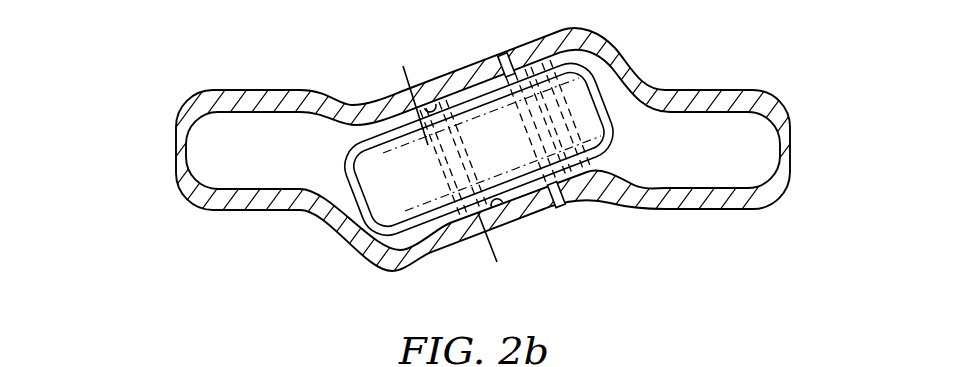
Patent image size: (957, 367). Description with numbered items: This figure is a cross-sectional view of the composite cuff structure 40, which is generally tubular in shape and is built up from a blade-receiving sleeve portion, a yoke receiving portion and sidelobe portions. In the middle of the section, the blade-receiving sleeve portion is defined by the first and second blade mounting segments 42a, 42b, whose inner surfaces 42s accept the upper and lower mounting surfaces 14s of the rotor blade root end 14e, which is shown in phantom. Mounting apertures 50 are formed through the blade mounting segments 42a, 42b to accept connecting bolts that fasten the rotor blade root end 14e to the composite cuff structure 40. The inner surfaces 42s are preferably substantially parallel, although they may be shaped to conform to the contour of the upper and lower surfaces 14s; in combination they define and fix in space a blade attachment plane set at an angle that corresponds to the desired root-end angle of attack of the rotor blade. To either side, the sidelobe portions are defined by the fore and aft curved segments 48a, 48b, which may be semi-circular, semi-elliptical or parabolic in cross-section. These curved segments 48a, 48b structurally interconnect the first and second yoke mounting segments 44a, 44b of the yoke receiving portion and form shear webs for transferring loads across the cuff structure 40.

The composite cuff structure 40 is at (453, 157).
The first yoke mounting segment 44a is at (258, 96).
The second yoke mounting segment 44b is at (254, 207).
The fore curved segment 48a is at (785, 130).
The aft curved segment 48b is at (178, 153).
The first blade mounting segment 42a is at (447, 76).
The second blade mounting segment 42b is at (527, 218).
The inner surfaces 42s is at (452, 165).
The mounting apertures 50 is at (398, 101).
The rotor blade root end 14e is at (563, 108).
The upper and lower mounting surfaces 14s is at (528, 52).